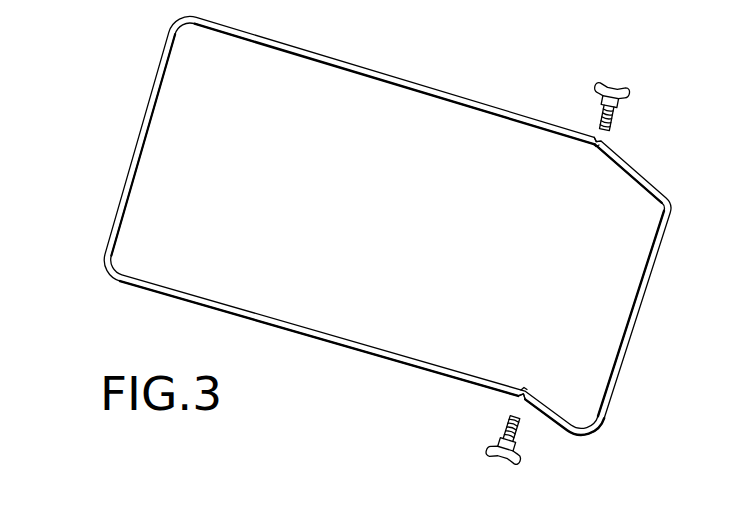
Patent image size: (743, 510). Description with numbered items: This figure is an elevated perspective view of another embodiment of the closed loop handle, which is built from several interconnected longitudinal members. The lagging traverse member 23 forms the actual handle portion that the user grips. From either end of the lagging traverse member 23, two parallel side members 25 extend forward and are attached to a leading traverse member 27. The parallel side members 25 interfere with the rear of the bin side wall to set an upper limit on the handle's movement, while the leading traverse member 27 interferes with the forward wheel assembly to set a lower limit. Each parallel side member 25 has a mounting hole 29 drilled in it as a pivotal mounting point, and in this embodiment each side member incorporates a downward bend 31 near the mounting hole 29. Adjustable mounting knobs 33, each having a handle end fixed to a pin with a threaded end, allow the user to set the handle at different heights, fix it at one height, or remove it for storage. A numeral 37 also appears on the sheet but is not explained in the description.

The frame 23 is at (133, 157).
The long side member of frame 25 is at (412, 82).
The end member of frame 27 is at (641, 310).
The notch 29 is at (604, 138).
The angled section 31 is at (636, 170).
The wing nut 33 is at (630, 93).
The element 37 is at (280, 509).